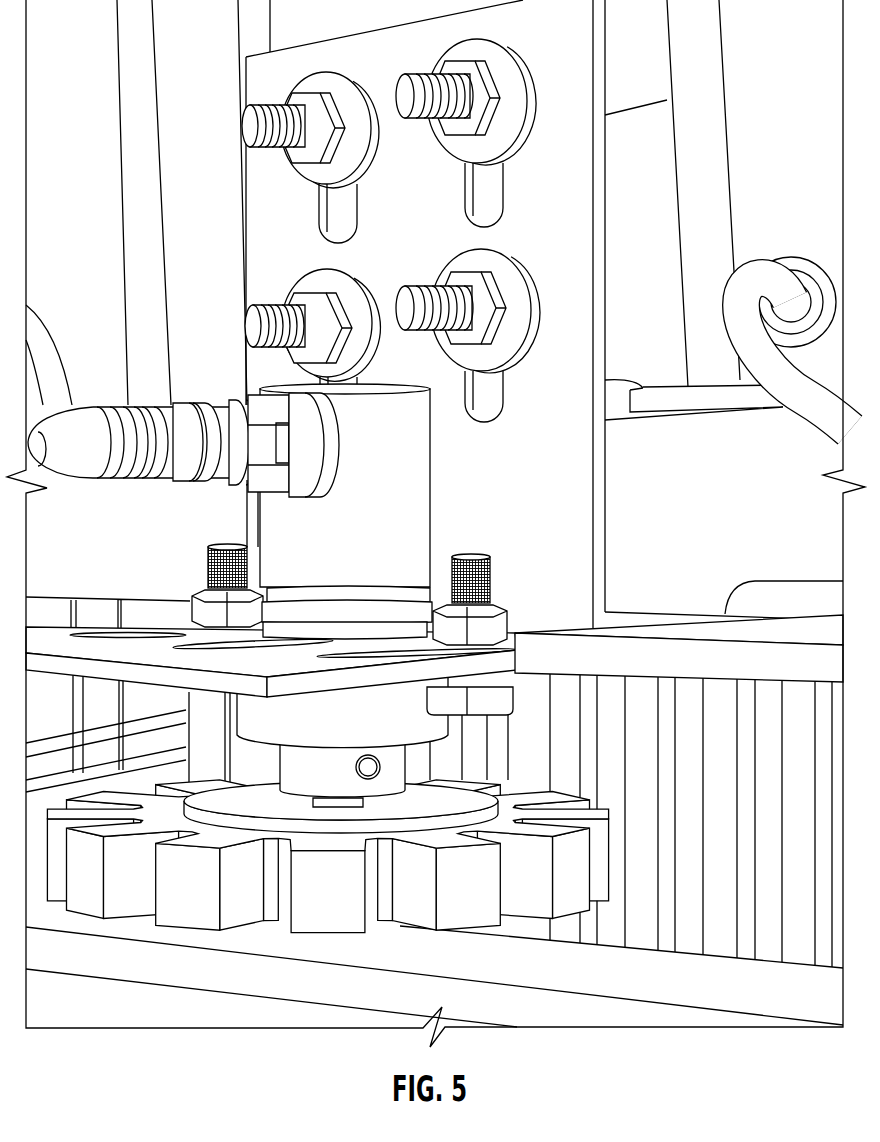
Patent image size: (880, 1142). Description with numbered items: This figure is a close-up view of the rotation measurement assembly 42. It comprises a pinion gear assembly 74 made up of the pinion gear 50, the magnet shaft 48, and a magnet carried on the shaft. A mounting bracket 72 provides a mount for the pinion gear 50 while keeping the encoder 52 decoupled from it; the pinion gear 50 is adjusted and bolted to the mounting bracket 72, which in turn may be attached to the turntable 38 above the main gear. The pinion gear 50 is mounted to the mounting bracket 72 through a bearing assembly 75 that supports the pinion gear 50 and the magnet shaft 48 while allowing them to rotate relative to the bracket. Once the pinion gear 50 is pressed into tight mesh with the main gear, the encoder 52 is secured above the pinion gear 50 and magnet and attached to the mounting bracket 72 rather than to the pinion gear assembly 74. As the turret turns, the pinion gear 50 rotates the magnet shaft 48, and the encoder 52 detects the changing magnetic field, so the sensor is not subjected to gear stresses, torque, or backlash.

The turntable 38 is at (687, 633).
The rotation measurement assembly 42 is at (226, 332).
The magnet shaft 48 is at (347, 805).
The pinion gear 50 is at (188, 790).
The encoder 52 is at (433, 504).
The mounting bracket 72 is at (580, 217).
The pinion gear assembly 74 is at (275, 794).
The bearing assembly 75 is at (343, 732).